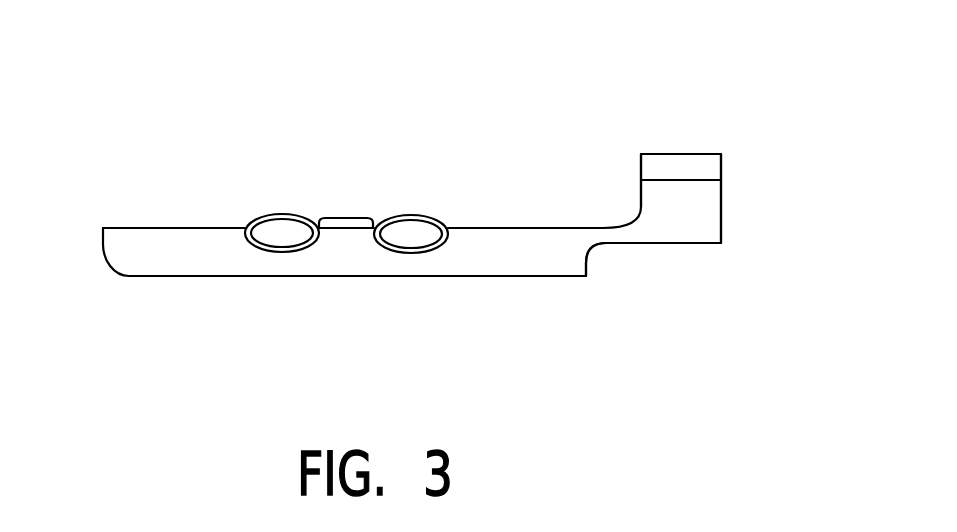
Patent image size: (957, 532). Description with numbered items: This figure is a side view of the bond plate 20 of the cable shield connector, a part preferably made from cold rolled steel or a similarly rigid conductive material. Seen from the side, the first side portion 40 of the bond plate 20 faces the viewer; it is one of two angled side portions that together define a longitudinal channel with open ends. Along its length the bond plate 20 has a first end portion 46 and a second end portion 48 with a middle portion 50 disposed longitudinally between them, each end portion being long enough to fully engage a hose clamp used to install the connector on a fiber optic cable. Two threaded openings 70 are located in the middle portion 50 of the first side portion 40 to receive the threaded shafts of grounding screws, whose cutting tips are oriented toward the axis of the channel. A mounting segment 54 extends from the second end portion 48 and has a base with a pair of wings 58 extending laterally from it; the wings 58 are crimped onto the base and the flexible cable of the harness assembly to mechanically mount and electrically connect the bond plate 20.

The bond plate 20 is at (175, 126).
The first side portion 40 is at (493, 265).
The first end portion 46 is at (127, 277).
The second end portion 48 is at (588, 277).
The middle portion 50 is at (347, 276).
The mounting segment 54 is at (721, 243).
The wings 58 is at (712, 191).
The threaded openings 70 is at (283, 233).